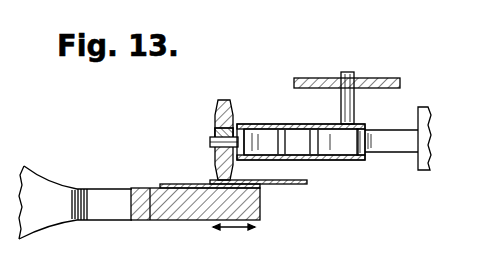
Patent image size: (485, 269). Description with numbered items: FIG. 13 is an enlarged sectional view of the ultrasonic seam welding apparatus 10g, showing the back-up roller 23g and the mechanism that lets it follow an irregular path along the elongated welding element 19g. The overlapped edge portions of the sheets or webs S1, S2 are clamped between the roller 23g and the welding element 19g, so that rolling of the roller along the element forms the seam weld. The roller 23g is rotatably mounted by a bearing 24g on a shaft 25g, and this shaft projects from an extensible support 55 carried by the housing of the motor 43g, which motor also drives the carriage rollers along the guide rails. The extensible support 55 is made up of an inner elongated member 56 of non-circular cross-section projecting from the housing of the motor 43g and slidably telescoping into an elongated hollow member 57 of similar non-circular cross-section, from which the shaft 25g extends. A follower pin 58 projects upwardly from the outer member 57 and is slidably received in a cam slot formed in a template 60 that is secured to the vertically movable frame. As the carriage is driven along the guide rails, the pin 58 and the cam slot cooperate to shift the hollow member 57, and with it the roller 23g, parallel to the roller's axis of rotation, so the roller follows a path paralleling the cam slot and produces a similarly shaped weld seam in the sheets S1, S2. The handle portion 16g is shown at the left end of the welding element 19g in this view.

The ultrasonic seam welding apparatus 10g is at (92, 130).
The handle 16g is at (58, 163).
The elongated welding element 19g is at (150, 220).
The back-up roller 23g is at (250, 90).
The bearing 24g is at (216, 120).
The shaft 25g is at (212, 141).
The motor 43g is at (419, 149).
The extensible support 55 is at (364, 122).
The inner elongated member 56 is at (373, 158).
The elongated hollow member 57 is at (280, 126).
The follower pin 58 is at (347, 72).
The template 60 is at (380, 79).
The sheet or web S1 is at (188, 184).
The sheet or web S2 is at (284, 186).